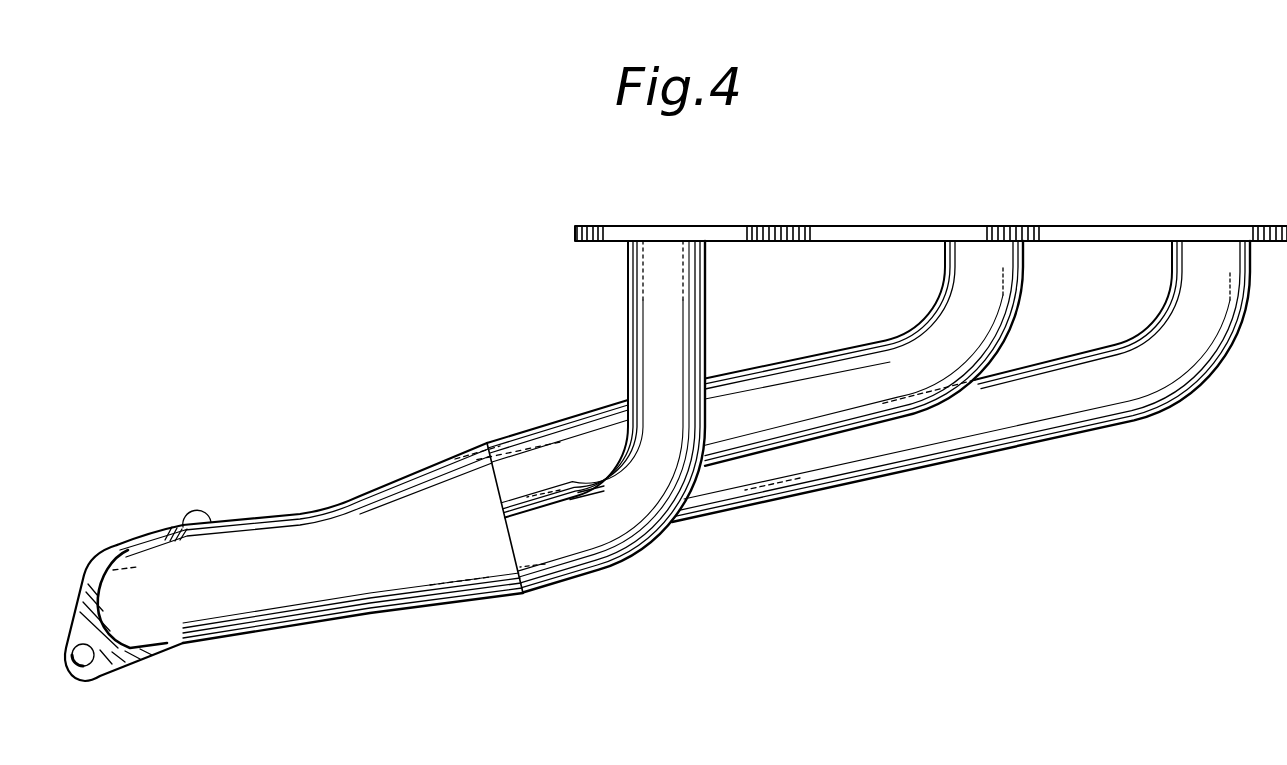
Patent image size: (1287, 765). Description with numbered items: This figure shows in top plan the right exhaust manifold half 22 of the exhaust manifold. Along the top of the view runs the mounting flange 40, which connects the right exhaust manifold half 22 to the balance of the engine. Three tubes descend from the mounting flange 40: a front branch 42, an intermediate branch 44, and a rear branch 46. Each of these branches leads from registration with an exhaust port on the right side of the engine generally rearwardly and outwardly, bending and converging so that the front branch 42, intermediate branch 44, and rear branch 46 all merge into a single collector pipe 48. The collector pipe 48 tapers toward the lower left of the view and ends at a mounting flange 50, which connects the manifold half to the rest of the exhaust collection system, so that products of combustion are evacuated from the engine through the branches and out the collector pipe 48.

The right exhaust manifold half 22 is at (1092, 192).
The mounting flange 40 is at (1157, 233).
The front branch 42 is at (1132, 400).
The intermediate branch 44 is at (997, 320).
The rear branch 46 is at (690, 323).
The collector pipe 48 is at (463, 472).
The mounting flange 50 is at (197, 523).